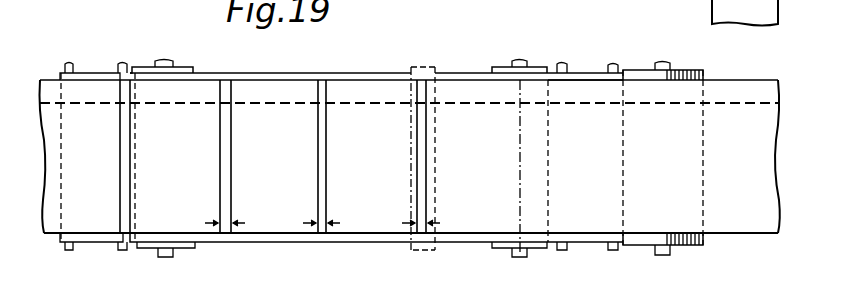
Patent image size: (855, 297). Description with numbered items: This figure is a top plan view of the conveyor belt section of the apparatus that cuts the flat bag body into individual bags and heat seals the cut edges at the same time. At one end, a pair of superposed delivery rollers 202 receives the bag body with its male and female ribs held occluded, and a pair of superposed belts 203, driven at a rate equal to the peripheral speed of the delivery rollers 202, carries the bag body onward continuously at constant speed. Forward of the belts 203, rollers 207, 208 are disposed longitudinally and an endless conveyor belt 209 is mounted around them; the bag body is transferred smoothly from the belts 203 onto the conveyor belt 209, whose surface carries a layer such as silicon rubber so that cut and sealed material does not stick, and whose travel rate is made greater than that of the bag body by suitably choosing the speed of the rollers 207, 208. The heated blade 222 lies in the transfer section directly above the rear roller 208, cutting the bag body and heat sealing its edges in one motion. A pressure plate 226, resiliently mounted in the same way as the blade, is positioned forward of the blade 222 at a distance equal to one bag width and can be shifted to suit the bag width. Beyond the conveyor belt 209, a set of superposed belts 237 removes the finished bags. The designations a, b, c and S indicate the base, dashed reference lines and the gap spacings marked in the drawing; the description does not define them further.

The set of superposed belts 237 is at (104, 72).
The roller 207 is at (183, 66).
The endless conveyor belt 209 is at (276, 72).
The pressure plate 226 is at (420, 66).
The rear roller 208 is at (500, 66).
The pair of superposed belts 203 is at (583, 72).
The pair of superposed delivery rollers 202 is at (678, 70).
The blade 222 is at (520, 208).
The base plate a is at (748, 210).
The dashed line b is at (409, 76).
The dashed line c is at (748, 103).
The gap spacing S is at (420, 255).